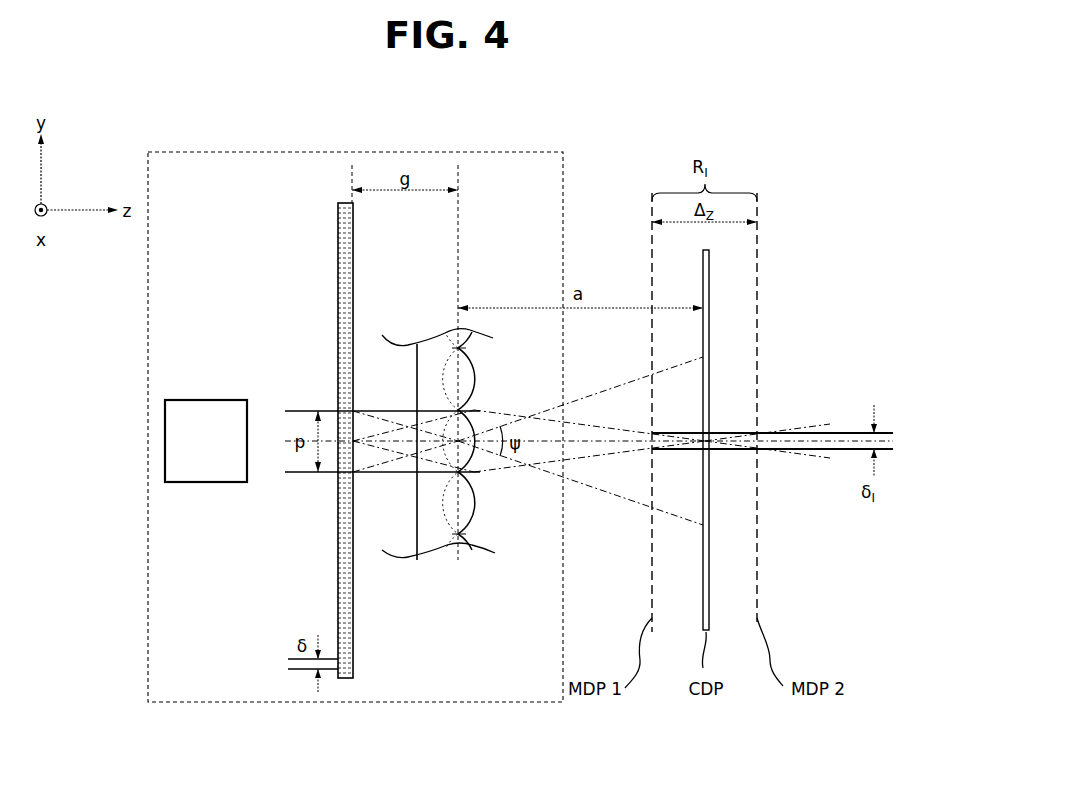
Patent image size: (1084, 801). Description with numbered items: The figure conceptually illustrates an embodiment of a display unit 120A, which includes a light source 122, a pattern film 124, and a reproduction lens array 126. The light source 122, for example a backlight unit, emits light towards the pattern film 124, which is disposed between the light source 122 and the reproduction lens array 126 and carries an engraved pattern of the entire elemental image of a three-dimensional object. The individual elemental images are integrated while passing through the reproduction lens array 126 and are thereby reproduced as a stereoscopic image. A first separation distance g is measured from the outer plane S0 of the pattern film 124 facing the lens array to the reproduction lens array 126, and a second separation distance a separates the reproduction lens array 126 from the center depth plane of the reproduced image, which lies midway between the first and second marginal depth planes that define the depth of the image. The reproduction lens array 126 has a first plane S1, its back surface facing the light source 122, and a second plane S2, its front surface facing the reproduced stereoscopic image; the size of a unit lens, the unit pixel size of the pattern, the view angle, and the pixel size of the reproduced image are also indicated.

The display unit 120A is at (563, 168).
The light source 122 is at (165, 440).
The pattern film 124 is at (345, 678).
The reproduction lens array 126 is at (456, 550).
The outer plane of the pattern film S0 is at (353, 260).
The first plane S1 is at (418, 560).
The second plane S2 is at (470, 537).